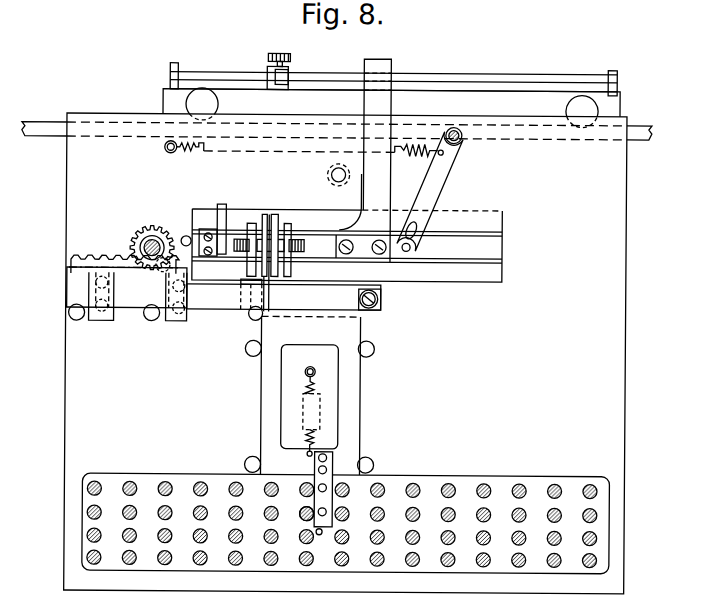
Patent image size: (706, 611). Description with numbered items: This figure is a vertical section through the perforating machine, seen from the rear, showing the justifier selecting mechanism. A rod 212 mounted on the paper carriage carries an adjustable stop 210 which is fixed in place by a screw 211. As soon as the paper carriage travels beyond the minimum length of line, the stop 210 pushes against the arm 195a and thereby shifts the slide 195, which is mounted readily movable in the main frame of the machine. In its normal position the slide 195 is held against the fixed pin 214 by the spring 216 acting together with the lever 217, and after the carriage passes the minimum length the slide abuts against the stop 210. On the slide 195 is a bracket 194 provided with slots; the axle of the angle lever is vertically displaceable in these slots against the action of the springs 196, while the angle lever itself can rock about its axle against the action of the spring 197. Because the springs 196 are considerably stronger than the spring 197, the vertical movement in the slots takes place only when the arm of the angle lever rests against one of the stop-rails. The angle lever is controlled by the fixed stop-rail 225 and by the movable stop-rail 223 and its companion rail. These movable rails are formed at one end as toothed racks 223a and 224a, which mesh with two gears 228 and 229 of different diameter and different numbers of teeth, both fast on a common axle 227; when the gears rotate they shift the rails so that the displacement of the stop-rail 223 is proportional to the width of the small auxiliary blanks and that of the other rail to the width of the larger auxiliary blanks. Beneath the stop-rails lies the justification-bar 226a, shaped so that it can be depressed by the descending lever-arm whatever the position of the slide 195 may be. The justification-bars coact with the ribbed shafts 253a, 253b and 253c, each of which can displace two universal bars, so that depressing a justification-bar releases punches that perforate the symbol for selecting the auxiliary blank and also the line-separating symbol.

The bracket 194 is at (270, 222).
The slide 195 is at (347, 245).
The arm 195a is at (392, 64).
The springs 196 is at (300, 252).
The spring 197 is at (291, 240).
The adjustable stop 210 is at (284, 72).
The screw 211 is at (283, 53).
The rod 212 is at (483, 72).
The fixed pin 214 is at (187, 235).
The spring 216 is at (283, 147).
The lever 217 is at (446, 170).
The movable stop-rail 223 is at (205, 302).
The toothed rack 223a is at (79, 255).
The toothed rack 224a is at (105, 262).
The fixed stop-rail 225 is at (350, 302).
The justification-bar 226a is at (355, 400).
The common axle 227 is at (148, 263).
The gear 228 is at (147, 225).
The gear 229 is at (160, 225).
The shaft 253a is at (312, 535).
The shaft 253b is at (305, 514).
The shaft 253c is at (308, 482).